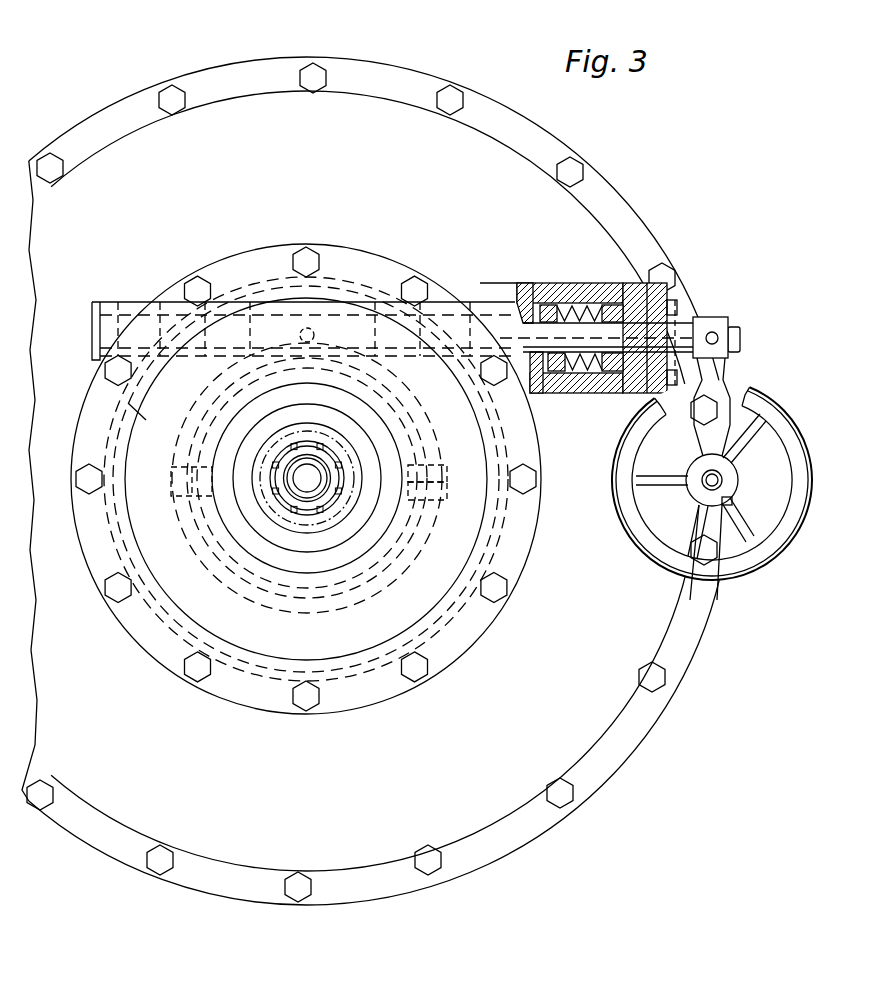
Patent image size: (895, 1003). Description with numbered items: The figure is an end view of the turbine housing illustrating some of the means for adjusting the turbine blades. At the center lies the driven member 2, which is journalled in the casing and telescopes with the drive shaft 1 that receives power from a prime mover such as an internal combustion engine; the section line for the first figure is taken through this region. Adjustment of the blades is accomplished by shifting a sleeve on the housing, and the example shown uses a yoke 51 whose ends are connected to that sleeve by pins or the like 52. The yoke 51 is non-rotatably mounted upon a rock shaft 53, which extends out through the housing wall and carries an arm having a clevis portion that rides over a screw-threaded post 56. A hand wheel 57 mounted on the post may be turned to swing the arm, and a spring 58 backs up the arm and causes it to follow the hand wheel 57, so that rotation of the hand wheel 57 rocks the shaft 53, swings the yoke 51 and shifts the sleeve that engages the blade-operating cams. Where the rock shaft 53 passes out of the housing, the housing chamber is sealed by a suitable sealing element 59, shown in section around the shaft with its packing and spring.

The drive shaft 1 is at (305, 643).
The driven member 2 is at (320, 486).
The yoke 51 is at (447, 470).
The pins 52 is at (447, 491).
The rock shaft 53 is at (535, 335).
The screw-threaded post 56 is at (722, 480).
The hand wheel 57 is at (783, 392).
The spring 58 is at (172, 480).
The sealing element 59 is at (578, 300).